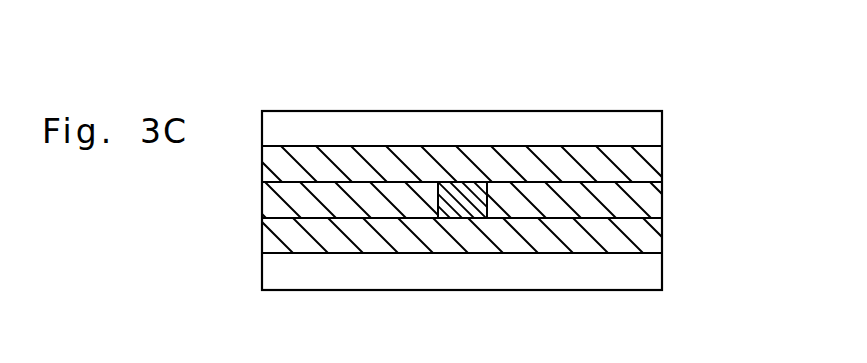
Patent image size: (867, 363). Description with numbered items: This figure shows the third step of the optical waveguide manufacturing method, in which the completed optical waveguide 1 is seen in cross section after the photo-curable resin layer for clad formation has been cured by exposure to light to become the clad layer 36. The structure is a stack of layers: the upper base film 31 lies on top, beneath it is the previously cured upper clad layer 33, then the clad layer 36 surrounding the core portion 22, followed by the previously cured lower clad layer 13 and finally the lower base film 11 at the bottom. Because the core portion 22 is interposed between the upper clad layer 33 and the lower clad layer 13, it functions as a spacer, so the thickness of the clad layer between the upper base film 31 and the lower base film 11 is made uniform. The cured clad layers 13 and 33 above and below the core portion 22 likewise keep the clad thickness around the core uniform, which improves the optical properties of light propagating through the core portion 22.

The semiconductor device 1 is at (548, 103).
The upper base film 31 is at (647, 131).
The upper clad layer 33 is at (654, 157).
The clad layer 36 is at (654, 202).
The core portion 22 is at (463, 219).
The lower clad layer 13 is at (654, 243).
The lower base film 11 is at (654, 276).